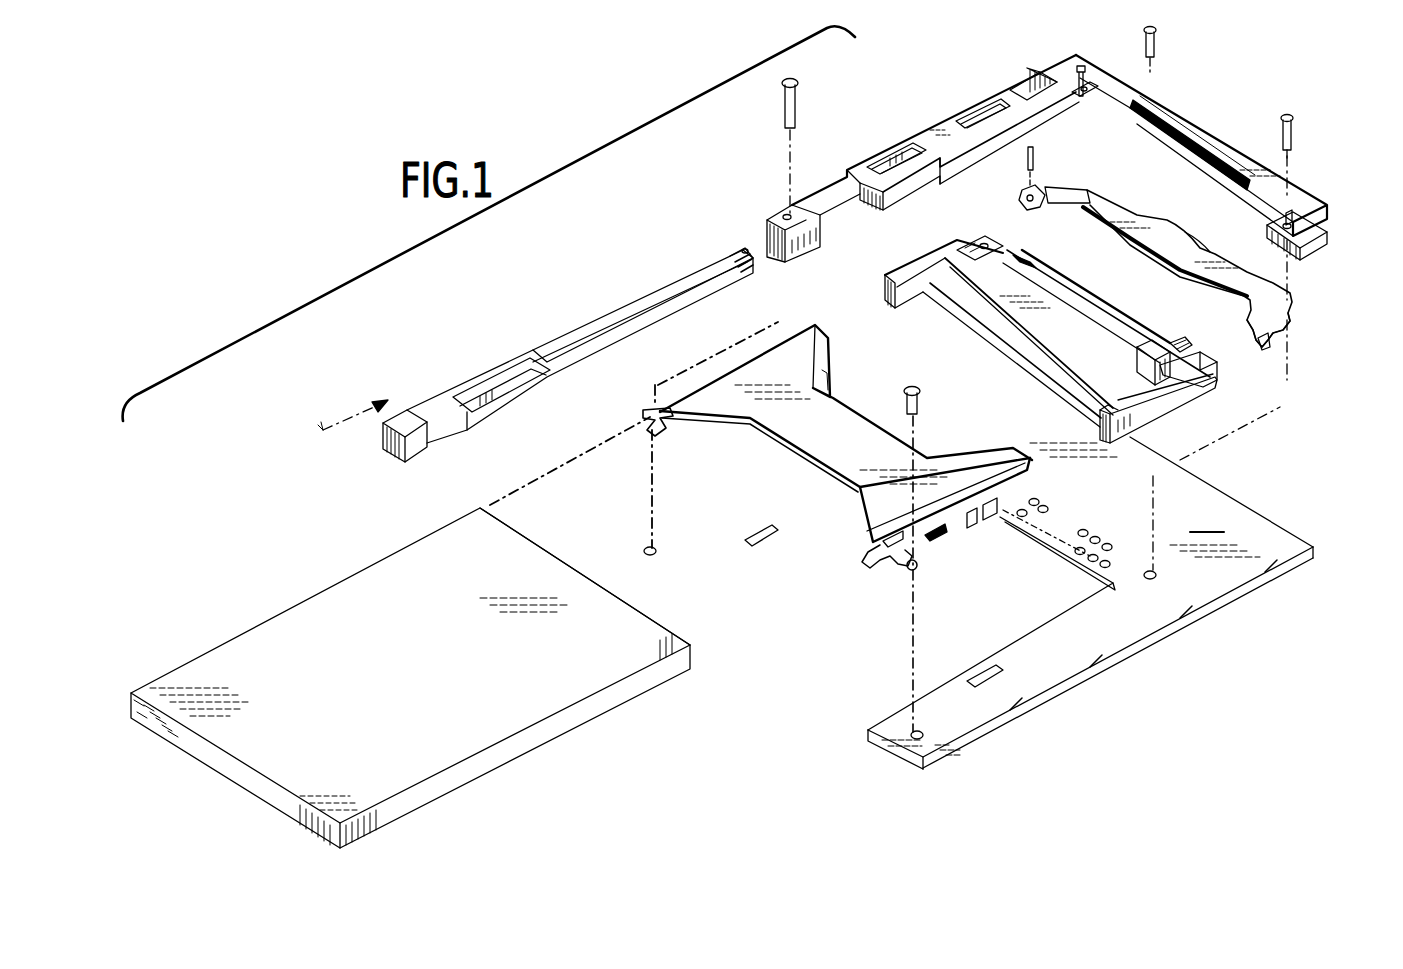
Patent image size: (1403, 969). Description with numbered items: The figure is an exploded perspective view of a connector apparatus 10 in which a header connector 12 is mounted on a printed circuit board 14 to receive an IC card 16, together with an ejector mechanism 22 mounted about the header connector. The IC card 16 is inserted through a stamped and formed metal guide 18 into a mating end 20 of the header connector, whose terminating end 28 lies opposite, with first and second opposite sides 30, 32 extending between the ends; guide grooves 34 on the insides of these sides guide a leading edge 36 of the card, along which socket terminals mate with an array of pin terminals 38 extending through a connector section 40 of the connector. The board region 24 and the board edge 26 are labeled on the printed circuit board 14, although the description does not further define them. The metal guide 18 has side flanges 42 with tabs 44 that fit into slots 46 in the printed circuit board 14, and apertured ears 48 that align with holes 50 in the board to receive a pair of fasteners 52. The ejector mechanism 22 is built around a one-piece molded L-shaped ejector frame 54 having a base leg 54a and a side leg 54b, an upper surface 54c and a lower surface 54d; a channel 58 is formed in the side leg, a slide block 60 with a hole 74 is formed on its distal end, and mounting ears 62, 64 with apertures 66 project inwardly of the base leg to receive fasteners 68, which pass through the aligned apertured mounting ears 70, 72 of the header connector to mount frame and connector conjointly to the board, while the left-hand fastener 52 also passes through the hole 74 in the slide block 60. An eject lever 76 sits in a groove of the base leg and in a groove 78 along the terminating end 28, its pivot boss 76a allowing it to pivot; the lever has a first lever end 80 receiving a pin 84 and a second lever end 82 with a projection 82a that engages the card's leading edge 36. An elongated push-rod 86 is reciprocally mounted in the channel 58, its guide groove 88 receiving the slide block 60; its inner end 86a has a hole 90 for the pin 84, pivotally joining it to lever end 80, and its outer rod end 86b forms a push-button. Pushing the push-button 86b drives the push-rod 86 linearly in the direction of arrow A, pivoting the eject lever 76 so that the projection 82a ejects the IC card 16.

The connector apparatus 10 is at (672, 192).
The header connector 12 is at (1059, 321).
The printed circuit board 14 is at (978, 593).
The IC card 16 is at (439, 678).
The stamped and formed metal guide 18 is at (761, 478).
The mating end 20 is at (1033, 345).
The ejector mechanism 22 is at (970, 65).
The upper surface of plate 24 is at (1207, 519).
The front edge 26 is at (1058, 697).
The terminating end 28 is at (1088, 295).
The first side 30 is at (905, 270).
The second side 32 is at (1160, 412).
The guide grooves 34 is at (905, 303).
The leading edge 36 is at (682, 625).
The pin terminals 38 is at (1025, 258).
The connector section 40 is at (1102, 302).
The side flanges 42 is at (933, 540).
The tabs 44 is at (990, 520).
The slots 46 is at (985, 668).
The apertured ears 48 is at (905, 572).
The holes 50 is at (924, 737).
The fasteners 52 is at (797, 93).
The L-shaped ejector frame 54 is at (1065, 201).
The base leg 54a is at (1201, 145).
The side leg 54b is at (940, 125).
The upper surface 54c is at (920, 135).
The lower surface 54d is at (948, 160).
The channel 58 is at (1035, 74).
The slide block 60 is at (819, 217).
The mounting ear 62 is at (1328, 238).
The mounting ear 64 is at (1138, 88).
The apertures 66 is at (1082, 82).
The fasteners 68 is at (1157, 48).
The apertured mounting ear 70 is at (1215, 380).
The apertured mounting ear 72 is at (985, 241).
The hole 74 is at (787, 214).
The eject lever 76 is at (1189, 242).
The pivot boss 76a is at (1200, 240).
The groove 78 is at (1137, 362).
The first lever end 80 is at (1040, 192).
The second lever end 82 is at (1303, 329).
The projection 82a is at (1290, 350).
The pin 84 is at (1036, 157).
The elongated push-rod 86 is at (605, 357).
The first or inner end 86a is at (735, 258).
The second or outer rod end 86b is at (430, 452).
The guide groove 88 is at (490, 385).
The hole 90 is at (778, 272).
The arrow A is at (356, 418).